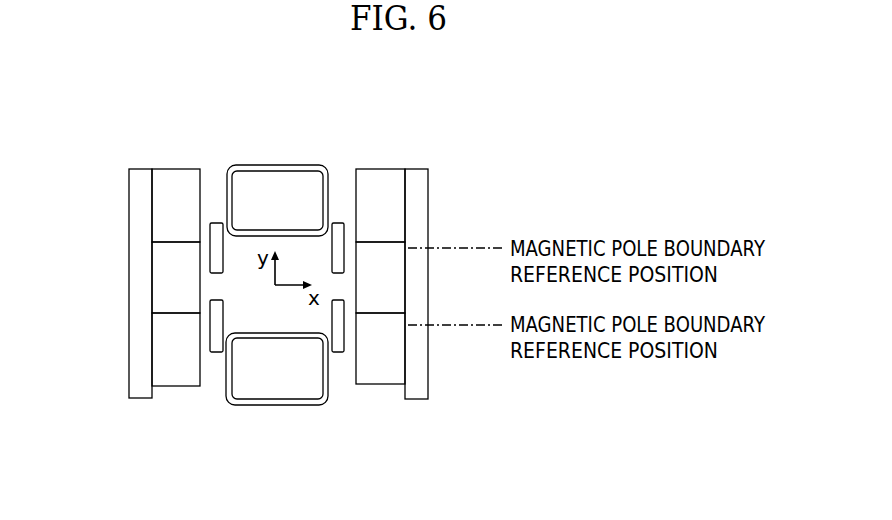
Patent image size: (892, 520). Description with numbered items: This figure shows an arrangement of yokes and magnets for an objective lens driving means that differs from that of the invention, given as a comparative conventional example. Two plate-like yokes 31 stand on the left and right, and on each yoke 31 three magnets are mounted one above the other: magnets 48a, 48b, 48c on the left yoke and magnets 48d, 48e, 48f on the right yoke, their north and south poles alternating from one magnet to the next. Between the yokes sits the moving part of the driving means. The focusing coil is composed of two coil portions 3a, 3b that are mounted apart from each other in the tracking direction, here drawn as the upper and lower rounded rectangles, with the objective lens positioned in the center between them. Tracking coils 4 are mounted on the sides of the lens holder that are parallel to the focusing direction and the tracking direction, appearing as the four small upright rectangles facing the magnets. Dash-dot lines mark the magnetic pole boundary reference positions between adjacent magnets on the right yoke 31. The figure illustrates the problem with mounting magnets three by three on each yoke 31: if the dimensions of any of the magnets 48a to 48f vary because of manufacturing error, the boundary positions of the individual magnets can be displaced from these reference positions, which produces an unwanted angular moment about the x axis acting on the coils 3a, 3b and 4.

The plate-like yoke 31 is at (138, 225).
The magnet 48a is at (173, 178).
The magnet 48b is at (172, 262).
The magnet 48c is at (165, 368).
The magnet 48d is at (377, 180).
The magnet 48e is at (382, 257).
The magnet 48f is at (388, 368).
The tracking coil 4 is at (217, 232).
The coil portion 3a is at (283, 168).
The coil portion 3b is at (280, 407).